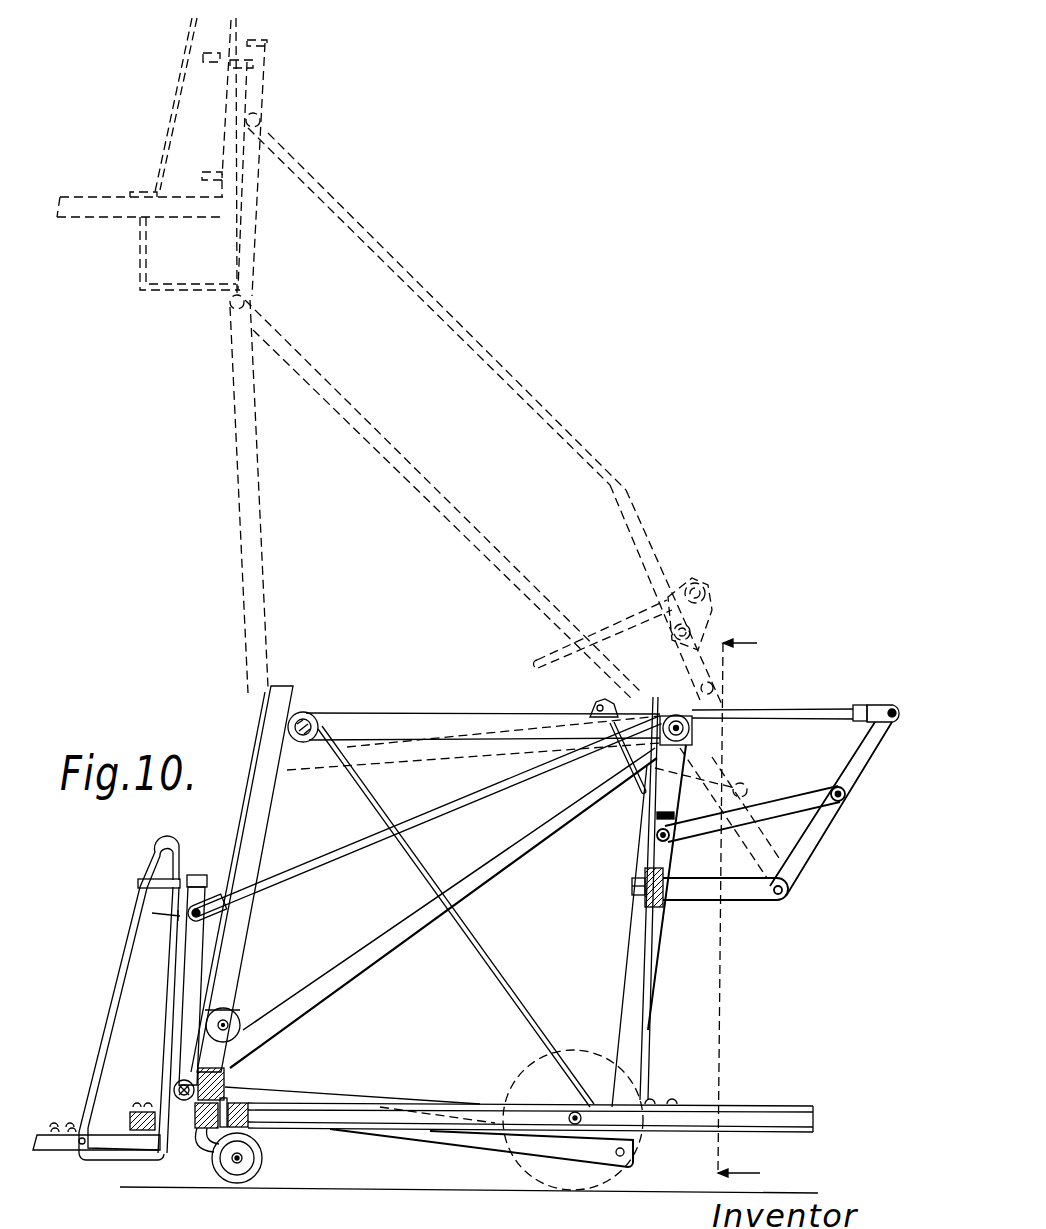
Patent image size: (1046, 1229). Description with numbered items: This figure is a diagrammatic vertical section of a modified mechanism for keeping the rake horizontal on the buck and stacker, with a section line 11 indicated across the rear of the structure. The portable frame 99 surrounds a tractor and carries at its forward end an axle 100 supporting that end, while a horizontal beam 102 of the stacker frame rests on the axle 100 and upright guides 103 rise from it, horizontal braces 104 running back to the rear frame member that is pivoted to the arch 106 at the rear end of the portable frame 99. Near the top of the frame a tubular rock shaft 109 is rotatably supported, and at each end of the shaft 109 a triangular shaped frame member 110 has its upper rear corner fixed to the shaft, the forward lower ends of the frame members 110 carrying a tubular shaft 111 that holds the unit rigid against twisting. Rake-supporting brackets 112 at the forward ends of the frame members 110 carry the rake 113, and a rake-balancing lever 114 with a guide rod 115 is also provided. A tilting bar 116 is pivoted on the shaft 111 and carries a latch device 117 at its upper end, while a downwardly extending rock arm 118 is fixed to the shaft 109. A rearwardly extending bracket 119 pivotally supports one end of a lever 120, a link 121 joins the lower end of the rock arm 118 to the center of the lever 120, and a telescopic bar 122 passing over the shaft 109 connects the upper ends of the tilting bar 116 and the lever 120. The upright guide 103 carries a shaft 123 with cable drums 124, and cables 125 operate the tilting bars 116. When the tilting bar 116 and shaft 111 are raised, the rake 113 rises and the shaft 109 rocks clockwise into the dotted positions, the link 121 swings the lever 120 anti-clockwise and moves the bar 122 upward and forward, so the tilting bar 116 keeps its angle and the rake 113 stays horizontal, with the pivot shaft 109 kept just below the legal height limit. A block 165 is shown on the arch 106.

The section line 11- 11 is at (740, 897).
The portable frame 99 is at (510, 1084).
The axle 100 is at (195, 1130).
The horizontal beam 102 is at (230, 1085).
The upright guides 103 is at (270, 833).
The horizontal braces 104 is at (393, 720).
The arch 106 is at (660, 845).
The tubular rock shaft 109 is at (673, 712).
The triangular shaped frame member 110 is at (380, 957).
The tubular shaft 111 is at (176, 1087).
The rake-supporting brackets 112 is at (118, 1160).
The rake 113 is at (68, 218).
The rake-balancing lever 114 is at (114, 993).
The guide rod 115 is at (167, 953).
The tilting bar 116 is at (198, 958).
The latch device 117 is at (162, 883).
The rock arm 118 is at (657, 803).
The bracket 119 is at (743, 897).
The lever 120 is at (802, 867).
The link 121 is at (840, 805).
The telescopic bar 122 is at (343, 850).
The shaft 123 is at (243, 1012).
The cable drums 124 is at (241, 1028).
The cables 125 is at (472, 940).
The clamp block 165 is at (665, 910).